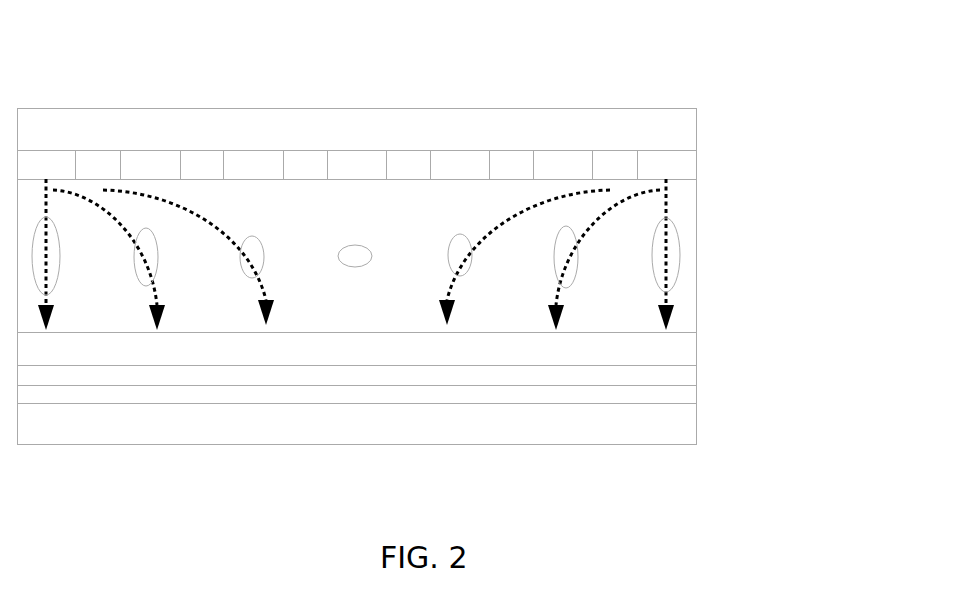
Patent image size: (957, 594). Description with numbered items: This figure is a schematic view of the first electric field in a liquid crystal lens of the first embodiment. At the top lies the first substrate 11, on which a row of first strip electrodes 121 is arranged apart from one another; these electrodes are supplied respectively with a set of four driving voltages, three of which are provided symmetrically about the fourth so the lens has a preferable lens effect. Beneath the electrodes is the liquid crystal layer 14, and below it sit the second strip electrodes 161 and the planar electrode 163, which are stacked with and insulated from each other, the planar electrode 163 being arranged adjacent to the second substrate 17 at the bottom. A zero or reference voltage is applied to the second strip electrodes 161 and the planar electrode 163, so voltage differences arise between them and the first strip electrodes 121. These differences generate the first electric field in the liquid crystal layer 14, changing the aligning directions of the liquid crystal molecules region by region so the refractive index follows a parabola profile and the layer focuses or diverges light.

The first substrate 11 is at (665, 138).
The first strip electrodes 121 is at (482, 157).
The liquid crystal layer 14 is at (685, 209).
The second strip electrodes 161 is at (662, 353).
The planar electrode 163 is at (667, 395).
The second substrate 17 is at (505, 433).